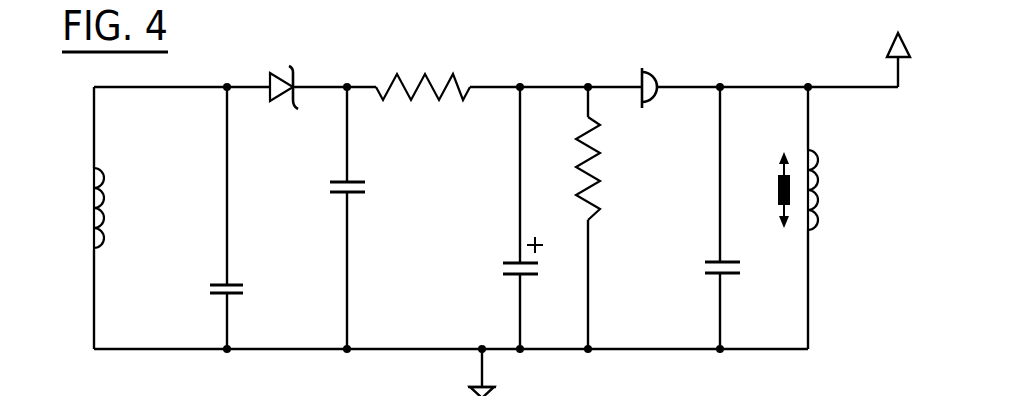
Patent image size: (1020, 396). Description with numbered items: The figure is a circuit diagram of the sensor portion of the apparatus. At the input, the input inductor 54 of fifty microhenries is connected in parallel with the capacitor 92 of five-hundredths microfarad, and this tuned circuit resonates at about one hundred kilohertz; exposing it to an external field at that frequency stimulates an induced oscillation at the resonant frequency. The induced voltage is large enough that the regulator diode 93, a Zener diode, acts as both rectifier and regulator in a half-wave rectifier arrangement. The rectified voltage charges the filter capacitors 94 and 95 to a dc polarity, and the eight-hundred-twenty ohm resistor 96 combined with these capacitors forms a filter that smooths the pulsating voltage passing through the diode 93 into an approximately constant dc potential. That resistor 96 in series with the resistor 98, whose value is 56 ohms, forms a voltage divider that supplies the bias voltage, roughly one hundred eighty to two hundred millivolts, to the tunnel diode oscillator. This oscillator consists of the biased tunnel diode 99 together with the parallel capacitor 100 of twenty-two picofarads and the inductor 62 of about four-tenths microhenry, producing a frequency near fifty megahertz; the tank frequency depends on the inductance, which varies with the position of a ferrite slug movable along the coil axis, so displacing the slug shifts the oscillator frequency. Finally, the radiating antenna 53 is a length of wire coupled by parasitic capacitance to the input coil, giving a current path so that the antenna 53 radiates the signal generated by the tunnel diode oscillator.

The radiating antenna 53 is at (887, 55).
The input inductor 54 is at (102, 252).
The ohm value of resistor 56 is at (619, 174).
The inductor 62 is at (823, 163).
The capacitor 92 is at (232, 284).
The regulator diode 93 is at (272, 96).
The filter capacitor 94 is at (350, 180).
The filter capacitor 95 is at (515, 277).
The 820 ohm resistor 96 is at (457, 86).
The 56 ohm resistor 98 is at (603, 190).
The tunnel diode 99 is at (662, 82).
The parallel capacitor 100 is at (726, 275).